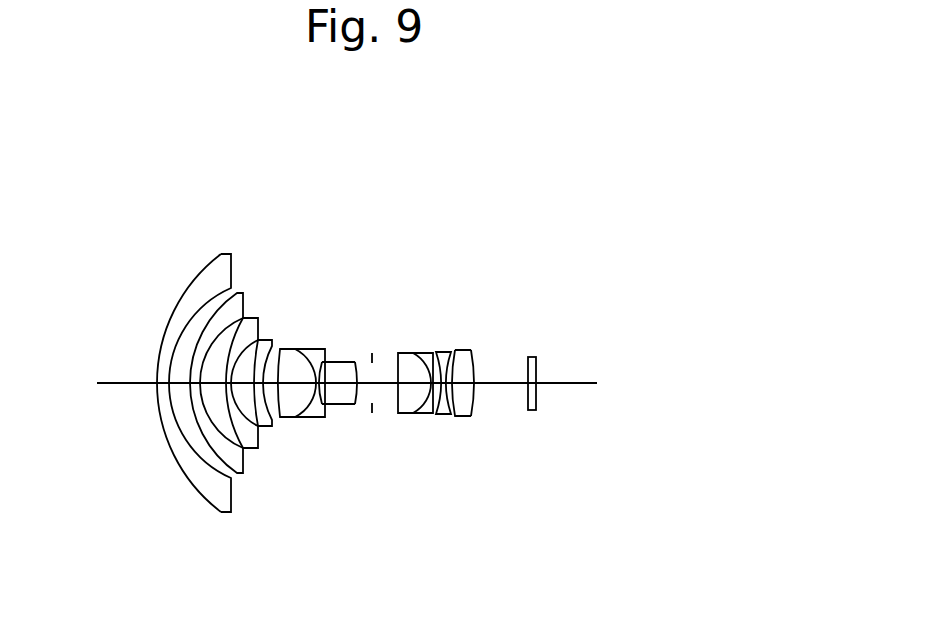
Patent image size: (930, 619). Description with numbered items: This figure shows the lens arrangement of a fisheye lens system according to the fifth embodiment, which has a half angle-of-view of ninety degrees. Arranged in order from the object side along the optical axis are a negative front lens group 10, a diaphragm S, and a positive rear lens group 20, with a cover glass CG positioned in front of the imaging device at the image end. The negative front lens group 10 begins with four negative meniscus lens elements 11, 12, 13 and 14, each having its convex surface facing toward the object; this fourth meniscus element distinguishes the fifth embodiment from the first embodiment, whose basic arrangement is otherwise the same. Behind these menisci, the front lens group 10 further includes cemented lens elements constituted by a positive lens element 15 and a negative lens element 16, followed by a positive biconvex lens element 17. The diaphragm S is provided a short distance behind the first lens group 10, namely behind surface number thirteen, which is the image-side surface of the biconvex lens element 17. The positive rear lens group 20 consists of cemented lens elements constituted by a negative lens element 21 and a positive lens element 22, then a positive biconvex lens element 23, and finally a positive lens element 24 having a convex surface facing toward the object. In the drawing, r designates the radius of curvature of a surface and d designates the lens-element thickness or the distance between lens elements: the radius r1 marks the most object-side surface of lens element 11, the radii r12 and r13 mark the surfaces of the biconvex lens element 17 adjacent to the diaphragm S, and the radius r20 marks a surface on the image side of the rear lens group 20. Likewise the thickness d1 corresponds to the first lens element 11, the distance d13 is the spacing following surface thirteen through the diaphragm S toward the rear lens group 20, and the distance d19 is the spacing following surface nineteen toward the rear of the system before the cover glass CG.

The negative front lens group 10 is at (553, 140).
The positive rear lens group 20 is at (767, 185).
The negative meniscus lens element 11 is at (207, 358).
The negative meniscus lens element 12 is at (238, 458).
The negative meniscus lens element 13 is at (255, 435).
The negative meniscus lens element 14 is at (272, 342).
The positive lens element 15 is at (289, 349).
The negative lens element 16 is at (313, 349).
The positive biconvex lens element 17 is at (443, 272).
The negative lens element 21 is at (410, 406).
The positive lens element 22 is at (424, 357).
The positive biconvex lens element 23 is at (452, 352).
The positive lens element 24 is at (606, 295).
The diaphragm S is at (372, 405).
The cover glass CG is at (535, 358).
The radius of curvature r1 is at (231, 254).
The radius of curvature r12 is at (398, 353).
The radius of curvature r13 is at (355, 362).
The radius of curvature r20 is at (466, 355).
The lens-element thickness d1 is at (157, 383).
The distance between lens elements d13 is at (373, 385).
The distance between lens elements d19 is at (470, 385).